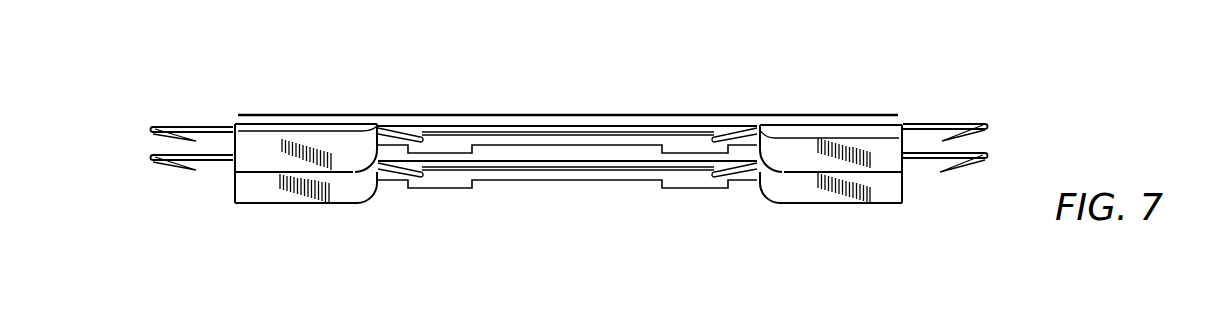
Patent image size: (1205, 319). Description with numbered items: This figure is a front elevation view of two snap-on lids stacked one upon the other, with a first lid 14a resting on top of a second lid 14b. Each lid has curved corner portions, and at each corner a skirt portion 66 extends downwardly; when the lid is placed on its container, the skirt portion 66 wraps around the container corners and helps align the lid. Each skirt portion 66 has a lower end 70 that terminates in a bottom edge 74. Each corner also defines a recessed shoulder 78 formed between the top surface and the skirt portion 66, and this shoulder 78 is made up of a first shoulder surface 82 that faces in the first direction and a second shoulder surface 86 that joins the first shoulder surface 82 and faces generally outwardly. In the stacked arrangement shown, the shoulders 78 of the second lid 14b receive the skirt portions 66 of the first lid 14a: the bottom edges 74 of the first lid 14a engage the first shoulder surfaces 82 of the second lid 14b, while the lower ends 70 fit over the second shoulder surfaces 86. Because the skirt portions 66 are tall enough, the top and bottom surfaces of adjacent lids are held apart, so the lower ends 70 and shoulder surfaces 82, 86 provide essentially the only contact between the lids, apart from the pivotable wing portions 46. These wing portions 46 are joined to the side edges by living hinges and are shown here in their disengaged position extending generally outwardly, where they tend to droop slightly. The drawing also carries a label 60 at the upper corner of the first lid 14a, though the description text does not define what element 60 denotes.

The first lid 14a is at (540, 117).
The second lid 14b is at (548, 158).
The pivotable wing portion 46 is at (186, 124).
The end block 60 is at (242, 152).
The skirt portion 66 is at (240, 183).
The lower end 70 is at (236, 150).
The bottom edge 74 is at (270, 205).
The recessed shoulder 78 is at (323, 133).
The first shoulder surface 82 is at (288, 134).
The second shoulder surface 86 is at (270, 136).